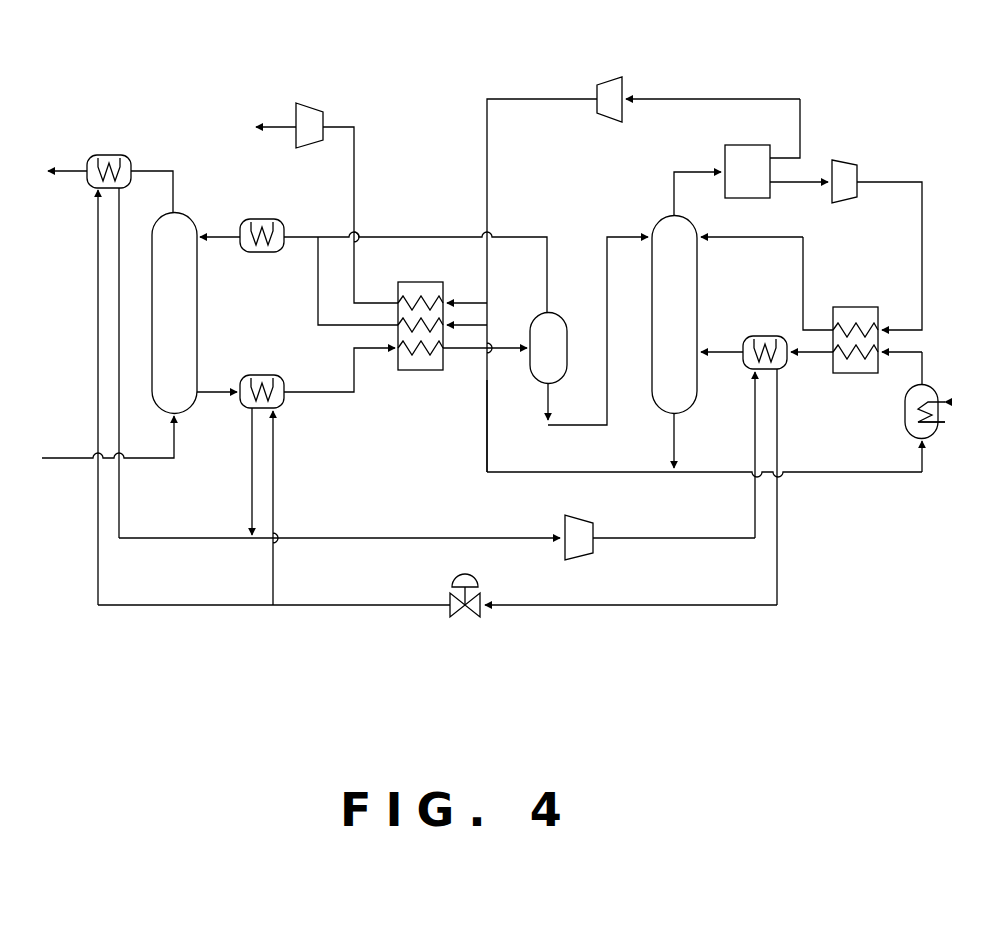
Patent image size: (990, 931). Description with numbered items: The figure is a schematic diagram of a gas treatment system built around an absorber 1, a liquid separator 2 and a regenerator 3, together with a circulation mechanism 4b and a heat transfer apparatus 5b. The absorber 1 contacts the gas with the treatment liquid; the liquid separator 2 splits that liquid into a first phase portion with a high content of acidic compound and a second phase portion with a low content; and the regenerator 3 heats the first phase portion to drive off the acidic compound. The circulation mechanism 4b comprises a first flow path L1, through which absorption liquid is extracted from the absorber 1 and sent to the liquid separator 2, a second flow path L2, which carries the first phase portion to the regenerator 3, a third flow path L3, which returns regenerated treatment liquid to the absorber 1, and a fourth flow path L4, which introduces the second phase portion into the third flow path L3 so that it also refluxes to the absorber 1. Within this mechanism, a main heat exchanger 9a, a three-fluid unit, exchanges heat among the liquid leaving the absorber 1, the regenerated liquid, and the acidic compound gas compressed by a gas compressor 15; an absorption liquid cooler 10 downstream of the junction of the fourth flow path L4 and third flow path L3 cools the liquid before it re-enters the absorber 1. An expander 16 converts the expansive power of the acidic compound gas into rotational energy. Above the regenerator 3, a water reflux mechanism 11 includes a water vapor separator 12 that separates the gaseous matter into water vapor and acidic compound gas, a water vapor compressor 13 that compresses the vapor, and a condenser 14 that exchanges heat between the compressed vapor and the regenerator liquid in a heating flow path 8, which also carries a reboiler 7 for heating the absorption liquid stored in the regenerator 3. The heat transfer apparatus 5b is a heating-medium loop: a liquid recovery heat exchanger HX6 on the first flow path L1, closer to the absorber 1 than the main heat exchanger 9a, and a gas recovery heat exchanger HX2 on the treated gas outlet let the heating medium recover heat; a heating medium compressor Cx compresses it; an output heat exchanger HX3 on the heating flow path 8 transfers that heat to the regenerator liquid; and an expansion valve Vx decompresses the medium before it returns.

The absorber 1 is at (186, 214).
The liquid separator 2 is at (562, 313).
The regenerator 3 is at (660, 214).
The circulation mechanism 4b is at (398, 221).
The heat transfer apparatus 5b is at (370, 532).
The reboiler 7 is at (905, 412).
The heating flow path 8 is at (855, 472).
The main heat exchanger 9a is at (414, 371).
The absorption liquid cooler 10 is at (265, 254).
The water reflux mechanism 11 is at (893, 181).
The water vapor separator 12 is at (720, 148).
The water vapor compressor 13 is at (843, 160).
The condenser 14 is at (856, 307).
The gas compressor 15 is at (607, 77).
The expander 16 is at (308, 103).
The gas recovery heat exchanger HX2 is at (103, 155).
The output heat exchanger HX3 is at (764, 336).
The liquid recovery heat exchanger HX6 is at (260, 375).
The first flow path L1 is at (318, 393).
The second flow path L2 is at (606, 235).
The third flow path L3 is at (487, 448).
The fourth flow path L4 is at (437, 235).
The heating medium compressor Cx is at (564, 519).
The expansion valve Vx is at (449, 596).